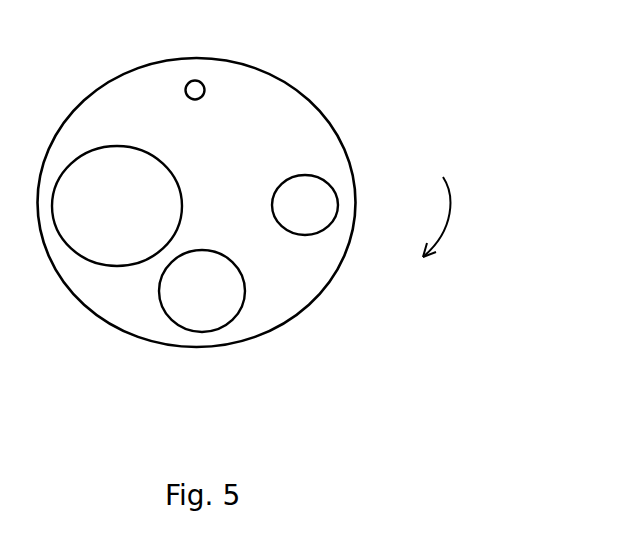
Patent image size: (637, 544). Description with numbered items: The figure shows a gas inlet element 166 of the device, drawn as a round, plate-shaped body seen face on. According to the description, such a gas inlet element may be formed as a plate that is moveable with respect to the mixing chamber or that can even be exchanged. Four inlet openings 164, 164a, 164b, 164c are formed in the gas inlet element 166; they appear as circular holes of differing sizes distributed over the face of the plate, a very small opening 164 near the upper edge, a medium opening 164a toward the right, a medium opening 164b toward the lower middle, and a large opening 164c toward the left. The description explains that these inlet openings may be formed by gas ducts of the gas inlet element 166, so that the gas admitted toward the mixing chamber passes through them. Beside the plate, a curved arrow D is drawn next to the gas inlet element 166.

The inlet opening 164 is at (202, 82).
The inlet opening 164a is at (329, 183).
The inlet opening 164b is at (239, 316).
The inlet opening 164c is at (90, 262).
The gas inlet element 166 is at (288, 82).
The direction of rotation D is at (450, 216).